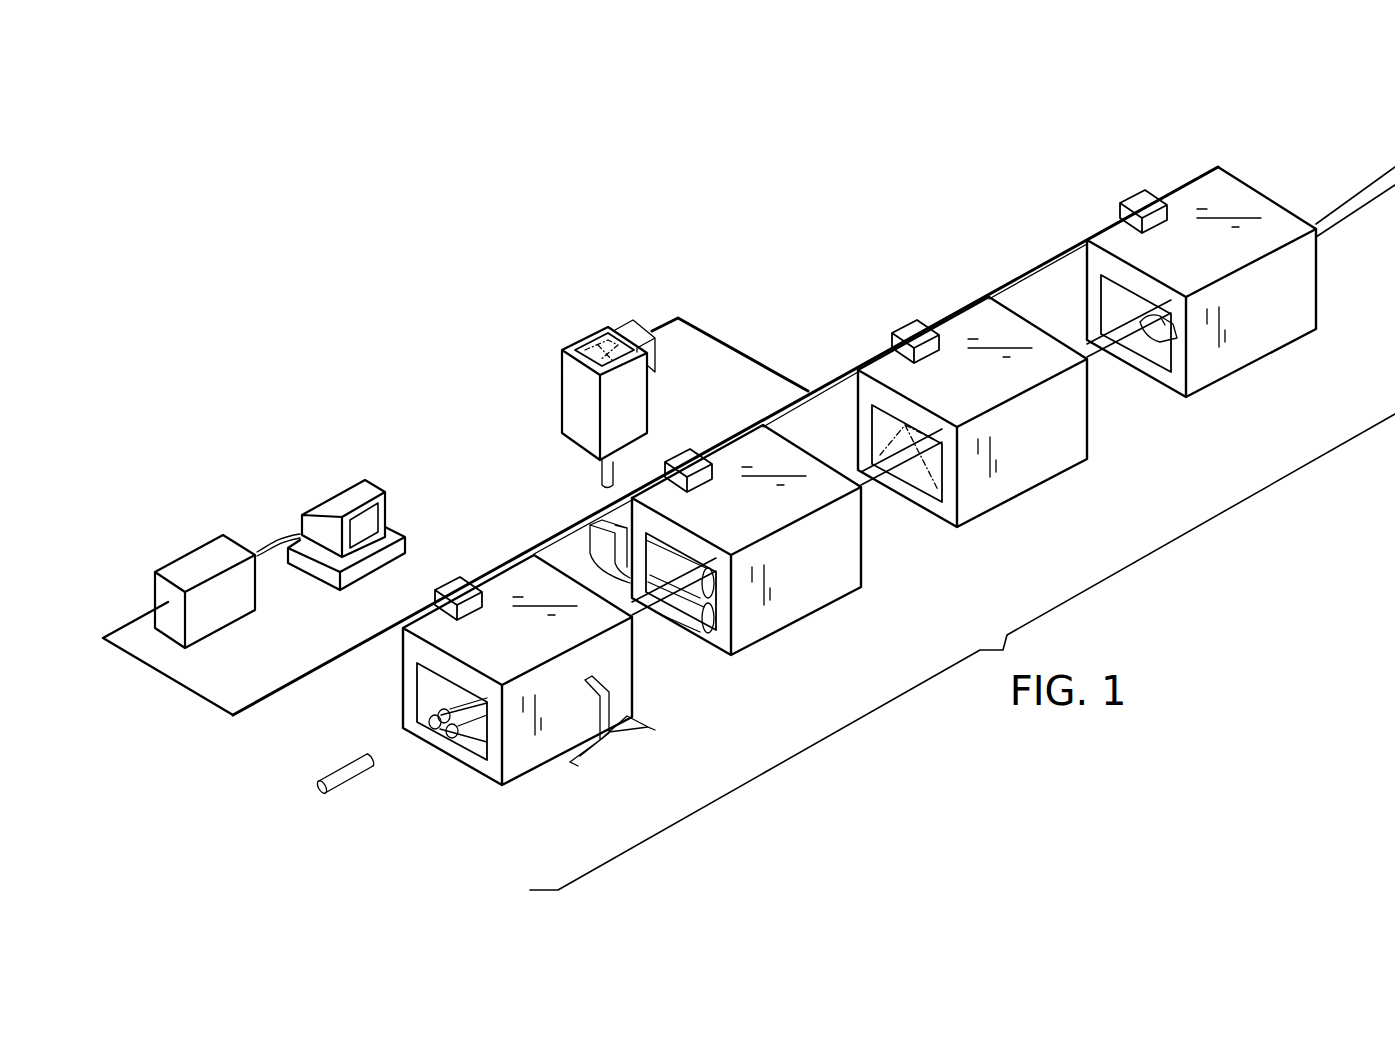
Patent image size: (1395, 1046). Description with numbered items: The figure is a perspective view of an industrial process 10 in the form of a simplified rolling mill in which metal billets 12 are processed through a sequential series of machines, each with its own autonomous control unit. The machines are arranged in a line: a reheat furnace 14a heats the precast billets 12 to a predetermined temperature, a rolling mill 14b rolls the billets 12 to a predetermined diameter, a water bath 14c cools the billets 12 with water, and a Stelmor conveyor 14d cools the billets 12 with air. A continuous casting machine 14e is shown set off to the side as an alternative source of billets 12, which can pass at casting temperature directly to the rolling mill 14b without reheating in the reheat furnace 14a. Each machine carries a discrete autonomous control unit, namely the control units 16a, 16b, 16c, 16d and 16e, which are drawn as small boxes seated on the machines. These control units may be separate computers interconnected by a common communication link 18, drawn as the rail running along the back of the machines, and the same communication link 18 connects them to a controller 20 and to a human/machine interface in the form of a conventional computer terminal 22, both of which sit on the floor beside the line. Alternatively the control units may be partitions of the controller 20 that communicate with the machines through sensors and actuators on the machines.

The industrial process 10 is at (1295, 128).
The metal billet 12 is at (343, 780).
The reheat furnace 14a is at (520, 760).
The rolling mill 14b is at (755, 623).
The water bath 14c is at (983, 500).
The Stelmor conveyor 14d is at (1208, 368).
The continuous casting machine 14e is at (577, 382).
The autonomous control unit 16a is at (457, 590).
The autonomous control unit 16b is at (682, 460).
The autonomous control unit 16c is at (912, 335).
The autonomous control unit 16d is at (1140, 198).
The autonomous control unit 16e is at (632, 332).
The communication link 18 is at (816, 383).
The controller 20 is at (215, 545).
The computer terminal 22 is at (370, 485).